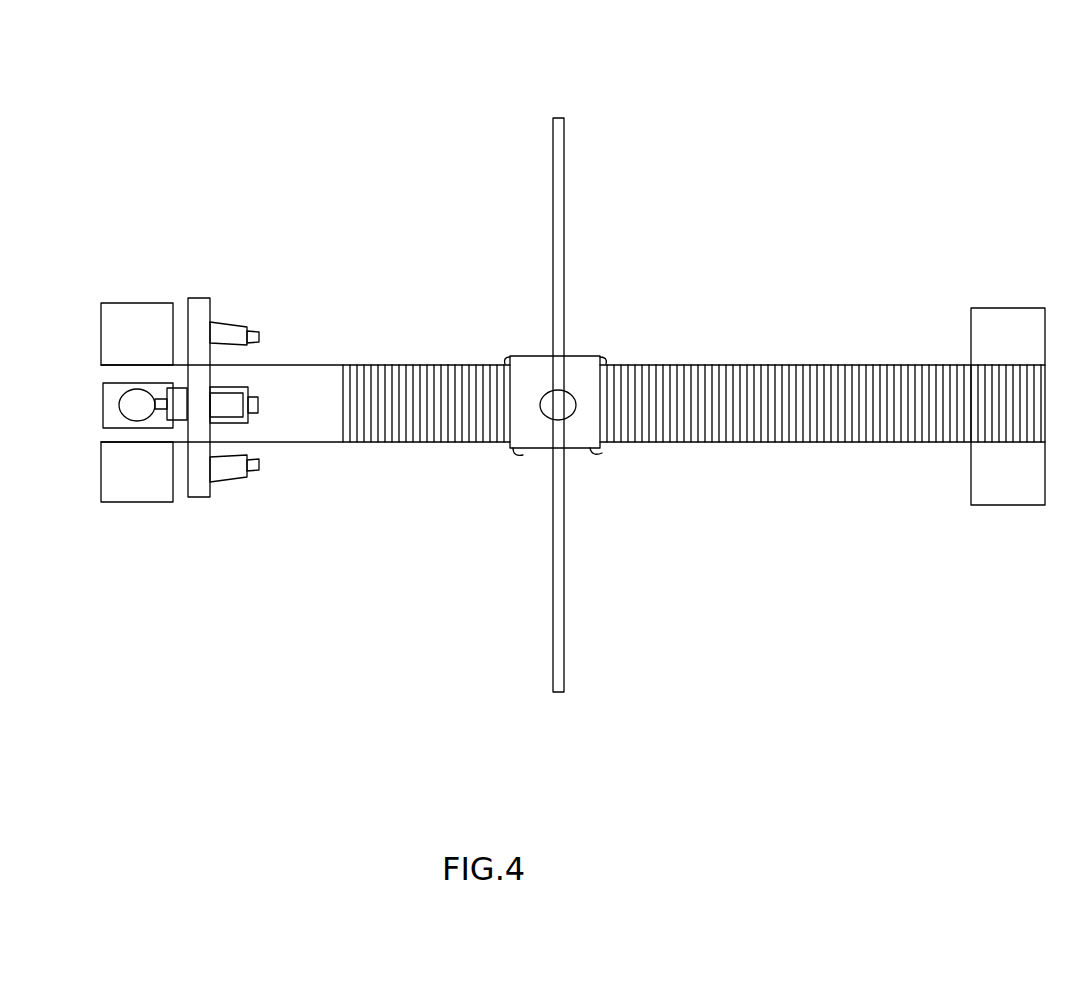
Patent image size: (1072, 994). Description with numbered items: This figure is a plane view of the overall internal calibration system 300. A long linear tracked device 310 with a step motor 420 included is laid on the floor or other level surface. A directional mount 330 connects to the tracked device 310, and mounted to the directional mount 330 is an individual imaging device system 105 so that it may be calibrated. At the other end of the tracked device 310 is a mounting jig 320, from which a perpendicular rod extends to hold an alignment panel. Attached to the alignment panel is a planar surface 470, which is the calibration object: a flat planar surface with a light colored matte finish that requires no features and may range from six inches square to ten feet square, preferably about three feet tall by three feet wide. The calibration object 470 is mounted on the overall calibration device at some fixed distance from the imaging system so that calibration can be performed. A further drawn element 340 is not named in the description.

The internal calibration system 300 is at (718, 90).
The individual imaging device system 105 is at (186, 302).
The linear tracked device 310 is at (732, 366).
The mounting jig 320 is at (583, 356).
The directional mount 330 is at (135, 505).
The coupling eye 340 is at (108, 391).
The step motor 420 is at (990, 305).
The planar surface 470 is at (565, 600).